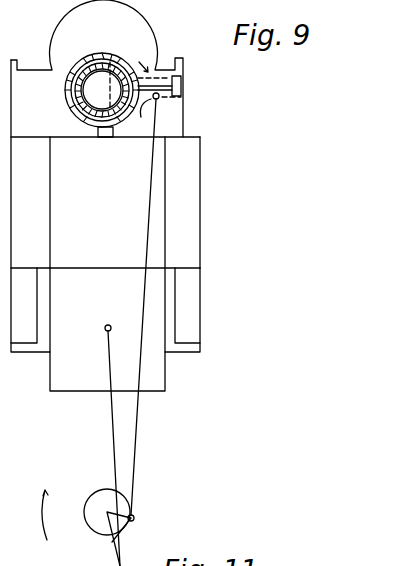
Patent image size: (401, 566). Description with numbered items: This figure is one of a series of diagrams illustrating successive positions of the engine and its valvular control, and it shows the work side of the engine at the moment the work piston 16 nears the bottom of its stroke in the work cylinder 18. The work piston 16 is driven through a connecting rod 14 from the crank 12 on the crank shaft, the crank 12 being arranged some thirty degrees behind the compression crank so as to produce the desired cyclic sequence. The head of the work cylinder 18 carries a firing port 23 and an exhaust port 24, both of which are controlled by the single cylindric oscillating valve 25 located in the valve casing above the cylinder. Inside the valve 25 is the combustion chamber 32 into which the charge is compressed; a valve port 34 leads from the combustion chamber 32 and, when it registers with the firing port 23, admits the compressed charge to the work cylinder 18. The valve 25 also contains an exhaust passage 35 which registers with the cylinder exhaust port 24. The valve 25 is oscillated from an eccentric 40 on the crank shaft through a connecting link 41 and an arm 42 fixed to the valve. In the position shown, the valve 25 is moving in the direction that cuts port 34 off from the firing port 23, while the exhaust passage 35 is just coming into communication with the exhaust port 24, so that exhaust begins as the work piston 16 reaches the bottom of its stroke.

The crank 12 is at (120, 565).
The connecting rod 14 is at (113, 432).
The work piston 16 is at (107, 264).
The work cylinder 18 is at (125, 202).
The firing port 23 is at (105, 130).
The exhaust port 24 is at (107, 147).
The oscillating valve 25 is at (98, 47).
The combustion chamber 32 is at (156, 96).
The valve port 34 is at (93, 120).
The exhaust passage 35 is at (128, 56).
The eccentric 40 is at (134, 517).
The connecting link 41 is at (147, 247).
The arm 42 is at (142, 118).